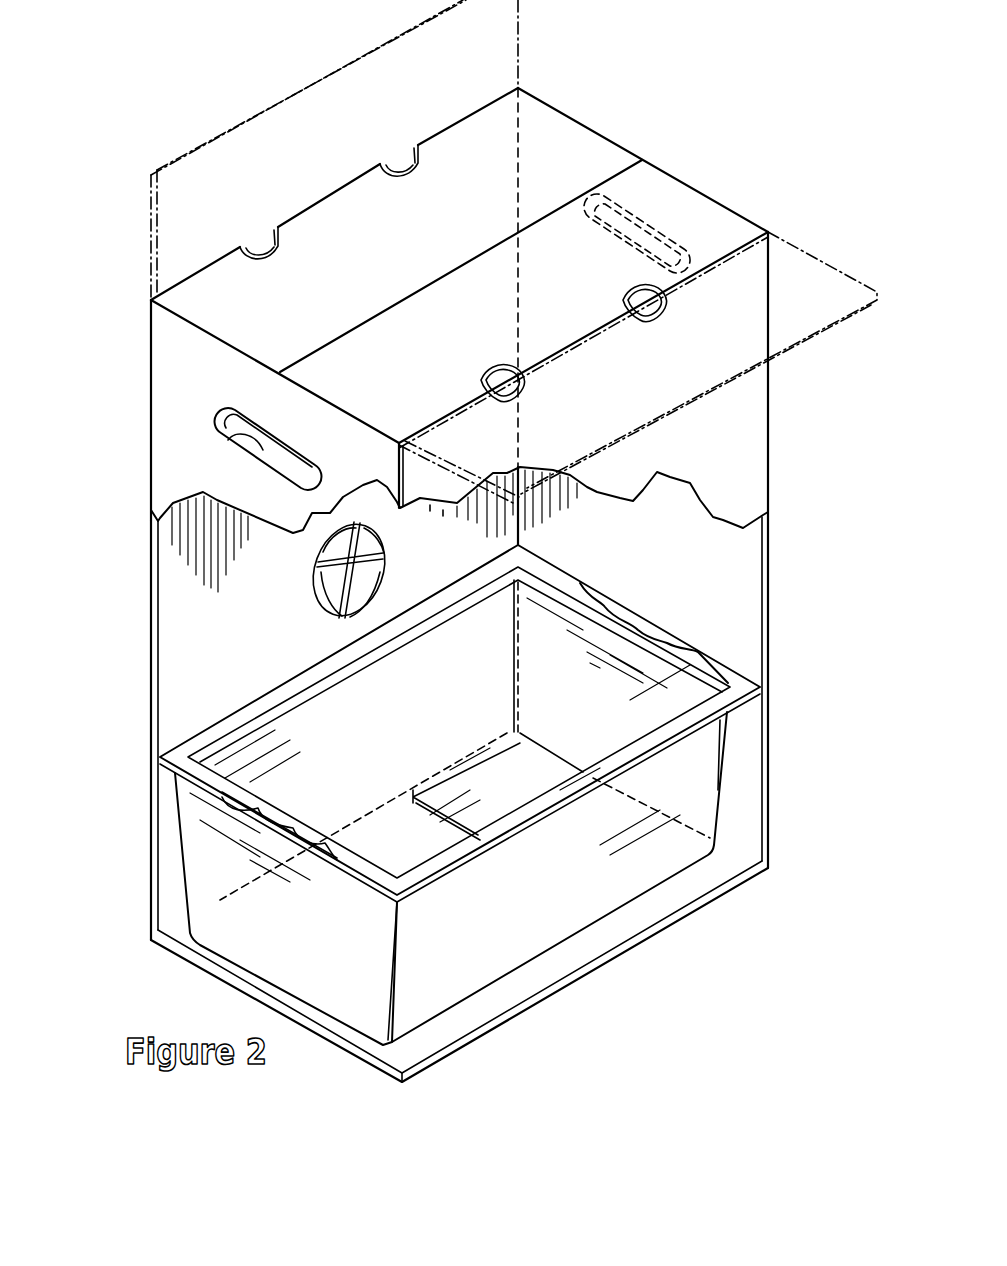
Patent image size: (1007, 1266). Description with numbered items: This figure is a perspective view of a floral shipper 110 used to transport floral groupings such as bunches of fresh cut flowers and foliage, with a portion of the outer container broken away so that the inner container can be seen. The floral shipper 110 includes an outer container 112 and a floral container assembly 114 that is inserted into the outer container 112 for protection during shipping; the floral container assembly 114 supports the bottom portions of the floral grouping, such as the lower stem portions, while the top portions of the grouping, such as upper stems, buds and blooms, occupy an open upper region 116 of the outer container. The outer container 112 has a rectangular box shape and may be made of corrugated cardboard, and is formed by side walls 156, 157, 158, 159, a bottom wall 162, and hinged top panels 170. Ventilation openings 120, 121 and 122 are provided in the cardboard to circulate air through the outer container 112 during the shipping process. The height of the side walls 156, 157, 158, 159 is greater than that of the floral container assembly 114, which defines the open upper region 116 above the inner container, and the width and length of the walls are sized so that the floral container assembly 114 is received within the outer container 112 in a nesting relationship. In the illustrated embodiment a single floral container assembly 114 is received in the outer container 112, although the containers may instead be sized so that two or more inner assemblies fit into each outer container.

The floral shipper 110 is at (683, 88).
The outer container 112 is at (136, 372).
The floral container assembly 114 is at (547, 900).
The open upper region 116 is at (693, 563).
The ventilation opening 120 is at (395, 181).
The ventilation opening 121 is at (263, 443).
The ventilation opening 122 is at (300, 580).
The side wall 156 is at (733, 622).
The side wall 157 is at (197, 550).
The side wall 158 is at (180, 465).
The side wall 159 is at (733, 450).
The bottom wall 162 is at (697, 878).
The hinged top panel 170 is at (292, 147).